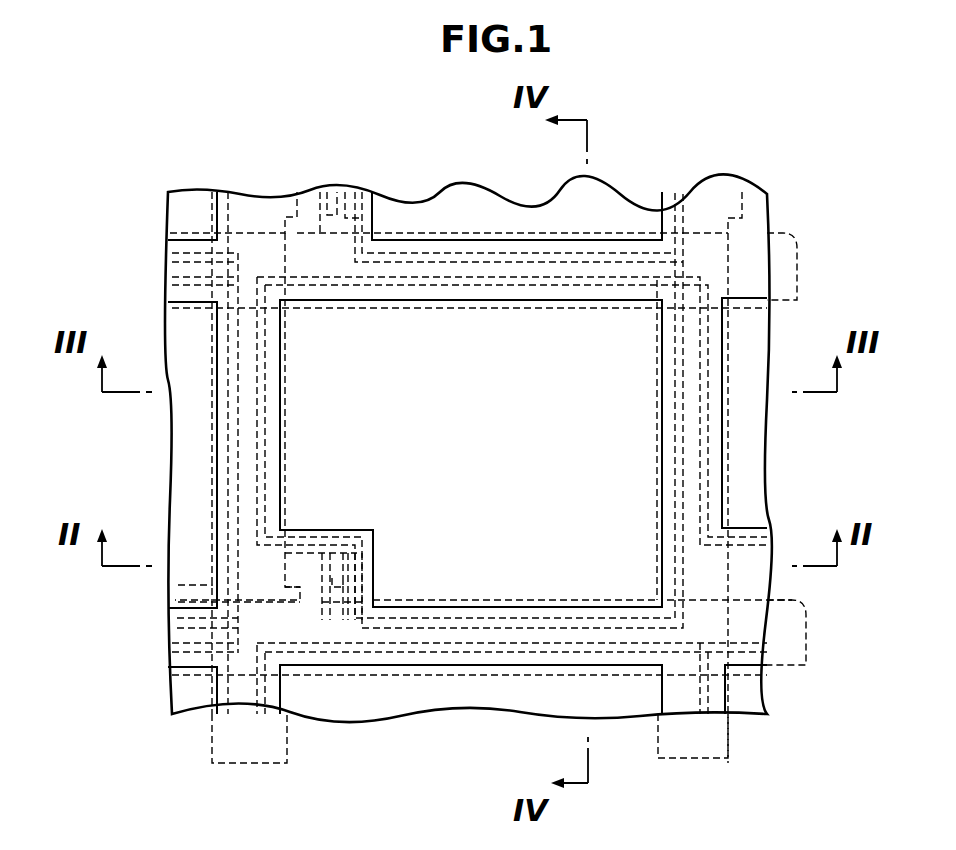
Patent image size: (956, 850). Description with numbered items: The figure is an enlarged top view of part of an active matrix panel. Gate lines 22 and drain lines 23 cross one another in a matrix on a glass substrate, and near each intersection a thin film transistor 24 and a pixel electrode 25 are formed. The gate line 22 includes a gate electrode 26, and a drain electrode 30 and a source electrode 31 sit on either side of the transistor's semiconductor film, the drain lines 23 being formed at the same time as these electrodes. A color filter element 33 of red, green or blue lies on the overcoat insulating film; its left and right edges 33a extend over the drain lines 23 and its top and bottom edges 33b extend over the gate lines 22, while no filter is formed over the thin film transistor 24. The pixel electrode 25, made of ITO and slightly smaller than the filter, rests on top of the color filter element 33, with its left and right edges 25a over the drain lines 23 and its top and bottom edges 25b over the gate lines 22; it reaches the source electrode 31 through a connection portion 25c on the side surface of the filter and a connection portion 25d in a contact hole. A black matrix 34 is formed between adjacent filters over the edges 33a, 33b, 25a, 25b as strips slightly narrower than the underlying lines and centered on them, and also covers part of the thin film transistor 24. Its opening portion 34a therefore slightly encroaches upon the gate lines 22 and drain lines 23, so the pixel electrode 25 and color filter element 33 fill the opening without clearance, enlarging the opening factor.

The gate line 22 is at (787, 243).
The drain line 23 is at (225, 762).
The thin film transistor 24 is at (323, 604).
The pixel electrode 25 is at (396, 322).
The left and right edges of the pixel electrode 25a is at (263, 380).
The top and bottom edges of the pixel electrode 25b is at (498, 285).
The connection portion 25c is at (345, 577).
The connection portion 25d is at (345, 577).
The gate electrode 26 is at (313, 560).
The drain electrode 30 is at (312, 558).
The source electrode 31 is at (337, 580).
The color filter element 33 is at (596, 287).
The left and right edges of the color filter element 33a is at (257, 452).
The top and bottom edges of the color filter element 33b is at (465, 277).
The black matrix 34 is at (242, 195).
The opening portion of the black matrix 34a is at (278, 346).